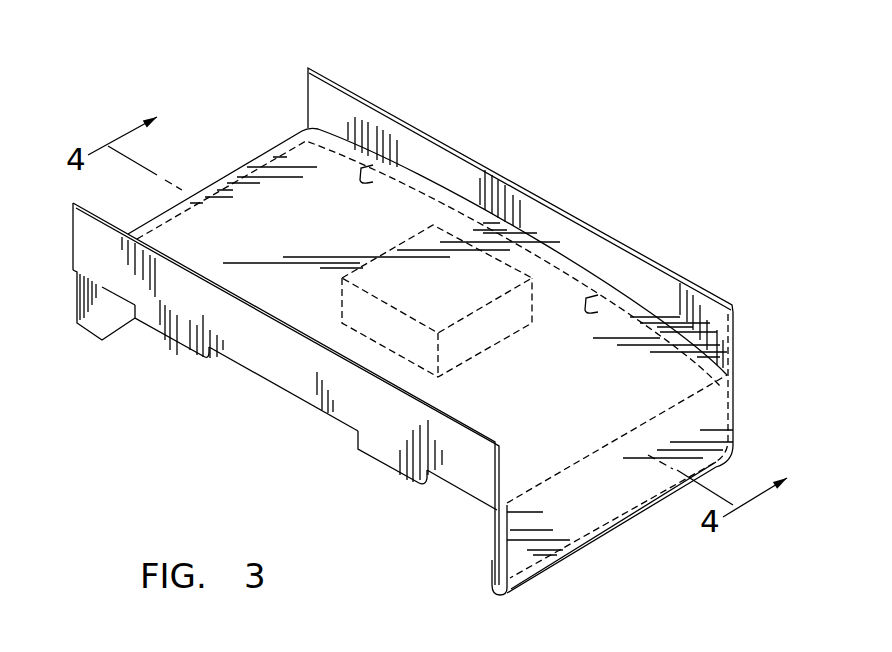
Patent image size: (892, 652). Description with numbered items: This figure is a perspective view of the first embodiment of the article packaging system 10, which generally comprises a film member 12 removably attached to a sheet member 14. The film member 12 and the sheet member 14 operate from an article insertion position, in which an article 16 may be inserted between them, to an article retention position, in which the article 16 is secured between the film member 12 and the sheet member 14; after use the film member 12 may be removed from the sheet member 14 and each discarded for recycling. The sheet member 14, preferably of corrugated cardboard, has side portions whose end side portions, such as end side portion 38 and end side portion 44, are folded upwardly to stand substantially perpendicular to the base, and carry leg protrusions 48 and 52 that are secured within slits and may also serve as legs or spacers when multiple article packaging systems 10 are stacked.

The article packaging system 10 is at (574, 108).
The film member 12 is at (275, 137).
The sheet member 14 is at (100, 290).
The article 16 is at (484, 286).
The end side portion 38 is at (283, 372).
The end side portion 44 is at (484, 278).
The leg protrusion 48 is at (396, 200).
The leg protrusion 52 is at (176, 342).